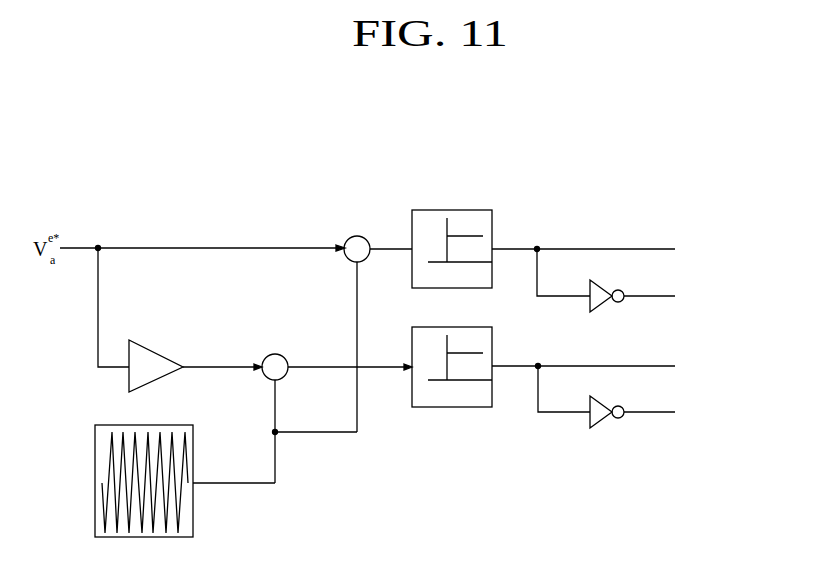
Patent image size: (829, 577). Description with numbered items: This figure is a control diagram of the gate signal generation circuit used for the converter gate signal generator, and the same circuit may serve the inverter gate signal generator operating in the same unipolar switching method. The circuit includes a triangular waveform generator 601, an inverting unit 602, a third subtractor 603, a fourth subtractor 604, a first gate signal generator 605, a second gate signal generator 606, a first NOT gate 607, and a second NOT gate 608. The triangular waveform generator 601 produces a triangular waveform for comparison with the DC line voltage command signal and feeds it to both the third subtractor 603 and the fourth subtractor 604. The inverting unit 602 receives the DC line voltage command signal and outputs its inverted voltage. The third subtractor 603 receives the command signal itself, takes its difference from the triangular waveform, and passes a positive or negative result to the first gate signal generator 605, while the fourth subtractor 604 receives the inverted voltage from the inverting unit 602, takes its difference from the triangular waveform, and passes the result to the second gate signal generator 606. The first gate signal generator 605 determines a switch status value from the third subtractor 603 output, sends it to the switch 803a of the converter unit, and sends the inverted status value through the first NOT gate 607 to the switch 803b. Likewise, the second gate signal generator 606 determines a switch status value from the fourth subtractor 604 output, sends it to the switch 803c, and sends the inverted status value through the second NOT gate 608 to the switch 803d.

The triangular waveform generator 601 is at (95, 453).
The inverting unit 602 is at (150, 348).
The third subtractor 603 is at (358, 236).
The fourth subtractor 604 is at (276, 354).
The first gate signal generator 605 is at (448, 210).
The second gate signal generator 606 is at (452, 407).
The first NOT gate 607 is at (600, 305).
The second NOT gate 608 is at (600, 422).
The switch 803a is at (639, 249).
The switch 803b is at (705, 296).
The switch 803c is at (639, 367).
The switch 803d is at (705, 413).